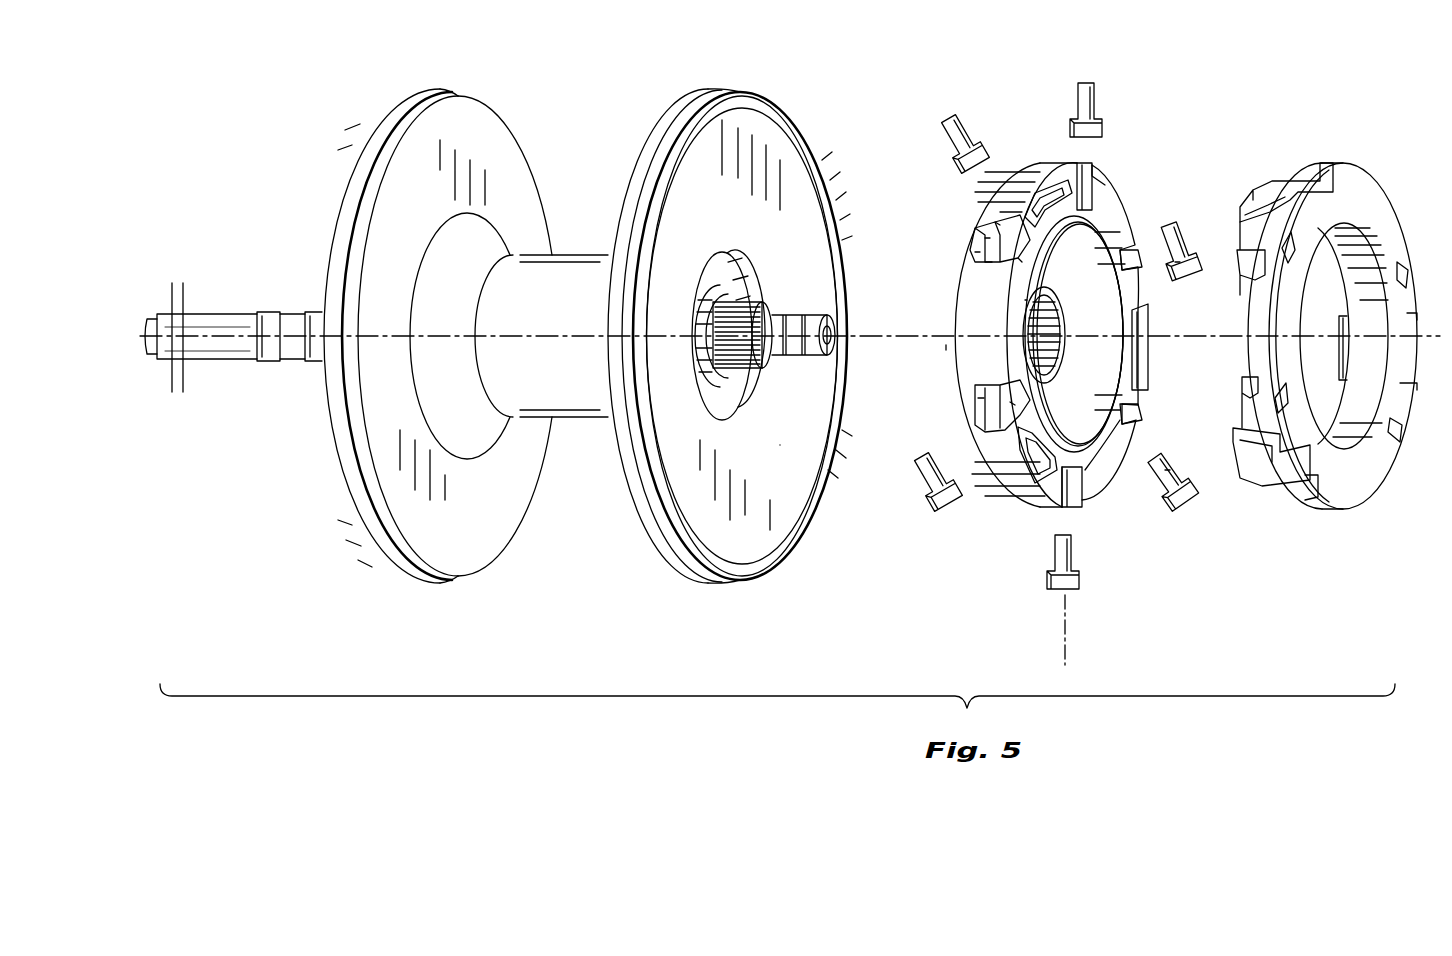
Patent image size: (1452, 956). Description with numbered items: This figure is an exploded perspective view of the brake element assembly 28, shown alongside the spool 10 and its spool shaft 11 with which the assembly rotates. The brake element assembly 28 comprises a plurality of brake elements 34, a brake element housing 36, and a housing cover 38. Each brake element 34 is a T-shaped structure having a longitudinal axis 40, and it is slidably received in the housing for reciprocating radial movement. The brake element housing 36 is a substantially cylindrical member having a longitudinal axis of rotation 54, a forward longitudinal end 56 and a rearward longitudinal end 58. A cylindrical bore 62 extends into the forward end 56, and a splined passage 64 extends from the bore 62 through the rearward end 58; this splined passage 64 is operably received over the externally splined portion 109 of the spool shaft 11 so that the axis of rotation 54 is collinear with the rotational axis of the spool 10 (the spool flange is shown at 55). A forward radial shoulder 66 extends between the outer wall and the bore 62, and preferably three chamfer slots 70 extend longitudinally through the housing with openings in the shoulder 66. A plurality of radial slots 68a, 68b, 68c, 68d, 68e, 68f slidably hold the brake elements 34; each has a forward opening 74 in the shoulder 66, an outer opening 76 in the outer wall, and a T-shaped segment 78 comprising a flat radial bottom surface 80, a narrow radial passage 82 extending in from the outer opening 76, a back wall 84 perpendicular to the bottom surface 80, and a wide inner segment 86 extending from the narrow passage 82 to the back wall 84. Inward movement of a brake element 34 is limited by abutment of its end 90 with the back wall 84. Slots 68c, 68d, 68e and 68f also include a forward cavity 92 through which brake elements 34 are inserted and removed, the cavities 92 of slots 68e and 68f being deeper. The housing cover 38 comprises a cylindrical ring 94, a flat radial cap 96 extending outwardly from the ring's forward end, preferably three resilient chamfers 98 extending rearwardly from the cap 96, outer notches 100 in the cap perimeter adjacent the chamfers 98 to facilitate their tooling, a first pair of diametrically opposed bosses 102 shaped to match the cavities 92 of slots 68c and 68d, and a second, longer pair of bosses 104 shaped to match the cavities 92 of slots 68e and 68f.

The spool 10 is at (500, 158).
The spool shaft 11 is at (280, 310).
The externally splined portion 109 is at (742, 302).
The spool flange 55 is at (784, 446).
The brake element assembly 28 is at (1242, 118).
The brake element 34 is at (955, 125).
The brake element housing 36 is at (1105, 200).
The housing cover 38 is at (1317, 335).
The longitudinal axis 40 is at (1078, 648).
The longitudinal axis of rotation 54 is at (878, 332).
The forward longitudinal end 56 is at (1100, 470).
The rearward longitudinal end 58 is at (942, 372).
The cylindrical bore 62 is at (1110, 372).
The splined passage 64 is at (1043, 322).
The forward radial shoulder 66 is at (1016, 320).
The radial slot 68a is at (1062, 498).
The radial slot 68b is at (1100, 178).
The radial slot 68c is at (1004, 392).
The radial slot 68d is at (1138, 240).
The radial slot 68e is at (1030, 172).
The radial slot 68f is at (1132, 432).
The chamfer slot 70 is at (1070, 168).
The forward opening 74 is at (1012, 404).
The outer opening 76 is at (985, 400).
The T-shaped segment 78 is at (1000, 426).
The flat radial bottom surface 80 is at (975, 255).
The narrow radial passage 82 is at (985, 238).
The back wall 84 is at (990, 262).
The wide inner segment 86 is at (1000, 228).
The end 90 is at (1172, 262).
The forward cavity 92 is at (1020, 262).
The cylindrical ring 94 is at (1355, 270).
The radial cap 96 is at (1378, 232).
The resilient chamfer 98 is at (1288, 180).
The outer notch 100 is at (1326, 176).
The boss 102 is at (1252, 410).
The boss 104 is at (1252, 245).